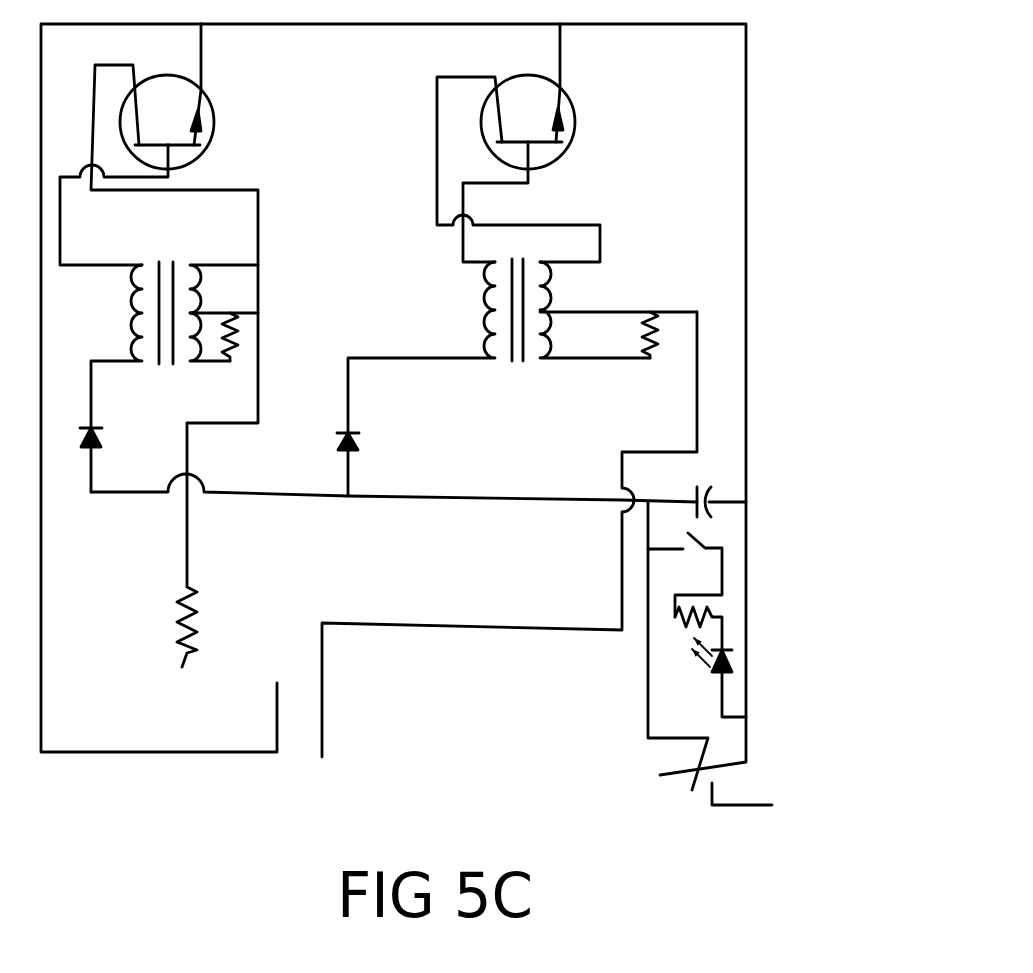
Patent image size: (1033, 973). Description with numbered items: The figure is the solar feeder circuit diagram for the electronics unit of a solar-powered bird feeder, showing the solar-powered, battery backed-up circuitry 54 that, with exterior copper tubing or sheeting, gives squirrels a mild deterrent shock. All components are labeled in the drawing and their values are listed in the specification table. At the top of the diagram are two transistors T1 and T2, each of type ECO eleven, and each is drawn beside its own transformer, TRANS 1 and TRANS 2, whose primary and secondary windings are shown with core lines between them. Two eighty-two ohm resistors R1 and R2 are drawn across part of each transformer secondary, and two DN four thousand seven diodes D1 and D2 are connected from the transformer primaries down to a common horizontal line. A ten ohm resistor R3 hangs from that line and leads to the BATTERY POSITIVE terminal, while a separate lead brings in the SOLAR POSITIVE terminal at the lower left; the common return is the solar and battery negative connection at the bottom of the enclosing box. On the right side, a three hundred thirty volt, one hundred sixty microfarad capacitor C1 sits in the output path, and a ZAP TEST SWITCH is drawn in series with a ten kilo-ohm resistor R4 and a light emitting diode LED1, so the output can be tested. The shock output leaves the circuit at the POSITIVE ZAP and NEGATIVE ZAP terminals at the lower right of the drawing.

The solar-powered, battery backed-up circuitry 54 is at (763, 140).
The transistor T1 is at (208, 110).
The transistor T2 is at (577, 118).
The transformer TRANS 1 is at (200, 290).
The transformer TRANS 2 is at (548, 295).
The resistor R1 is at (227, 350).
The resistor R2 is at (655, 345).
The resistor R3 is at (159, 571).
The resistor R4 is at (700, 612).
The diode D1 is at (98, 440).
The diode D2 is at (353, 450).
The capacitor C1 is at (712, 491).
The light emitting diode LED1 is at (712, 660).
The zap test switch ZAP TEST SWITCH is at (688, 542).
The battery positive terminal BATTERY POSITIVE is at (182, 667).
The solar positive terminal SOLAR POSITIVE is at (323, 720).
The positive zap terminal POSITIVE ZAP is at (746, 762).
The negative zap terminal NEGATIVE ZAP is at (722, 798).